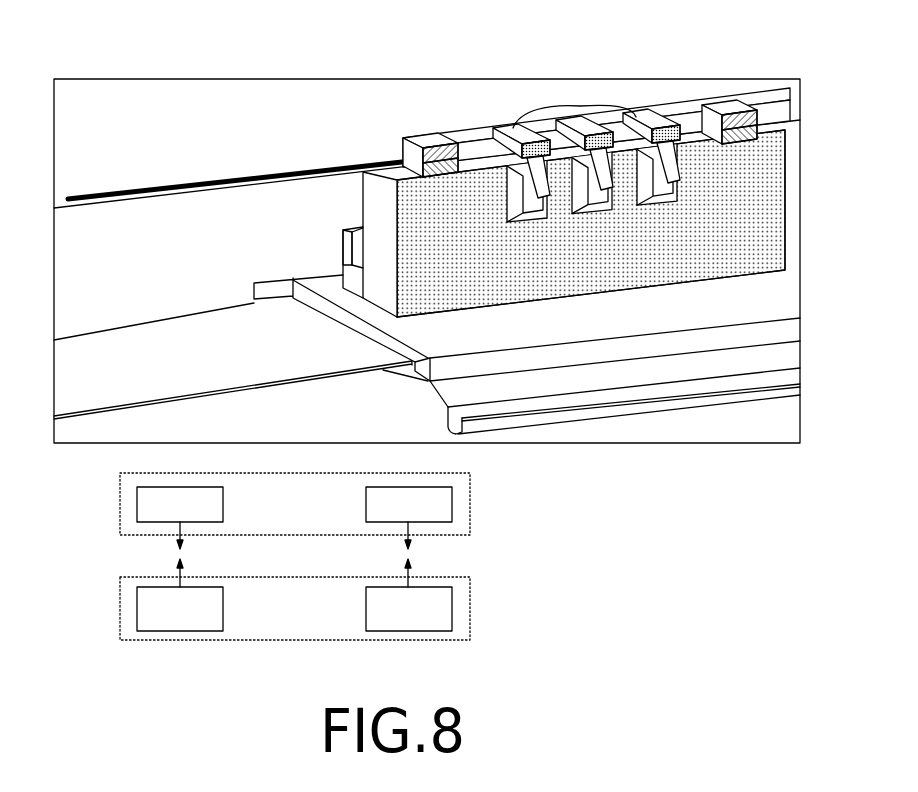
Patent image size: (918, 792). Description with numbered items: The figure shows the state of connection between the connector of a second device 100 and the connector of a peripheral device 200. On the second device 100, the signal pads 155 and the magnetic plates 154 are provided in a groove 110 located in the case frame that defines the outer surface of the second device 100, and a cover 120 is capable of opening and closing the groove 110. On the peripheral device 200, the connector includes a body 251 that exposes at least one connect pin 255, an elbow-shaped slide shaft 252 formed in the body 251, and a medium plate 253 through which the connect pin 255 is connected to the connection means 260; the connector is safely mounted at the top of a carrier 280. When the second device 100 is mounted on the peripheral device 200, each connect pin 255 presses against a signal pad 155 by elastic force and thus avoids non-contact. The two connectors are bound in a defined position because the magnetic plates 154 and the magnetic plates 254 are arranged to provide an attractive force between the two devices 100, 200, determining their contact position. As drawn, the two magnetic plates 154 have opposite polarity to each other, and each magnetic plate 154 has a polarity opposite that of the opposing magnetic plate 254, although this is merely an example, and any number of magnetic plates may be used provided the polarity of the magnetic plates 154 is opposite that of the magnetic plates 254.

The second device 100 is at (252, 115).
The groove 110 is at (468, 133).
The cover 120 is at (382, 163).
The magnetic plates 154 is at (461, 144).
The signal pads 155 is at (553, 118).
The peripheral device 200 is at (266, 215).
The body 251 is at (384, 194).
The elbow-shaped slide shaft 252 is at (345, 228).
The medium plate 253 is at (318, 284).
The magnetic plates 254 is at (415, 170).
The connect pin 255 is at (675, 184).
The connection means 260 is at (213, 382).
The carrier 280 is at (467, 392).